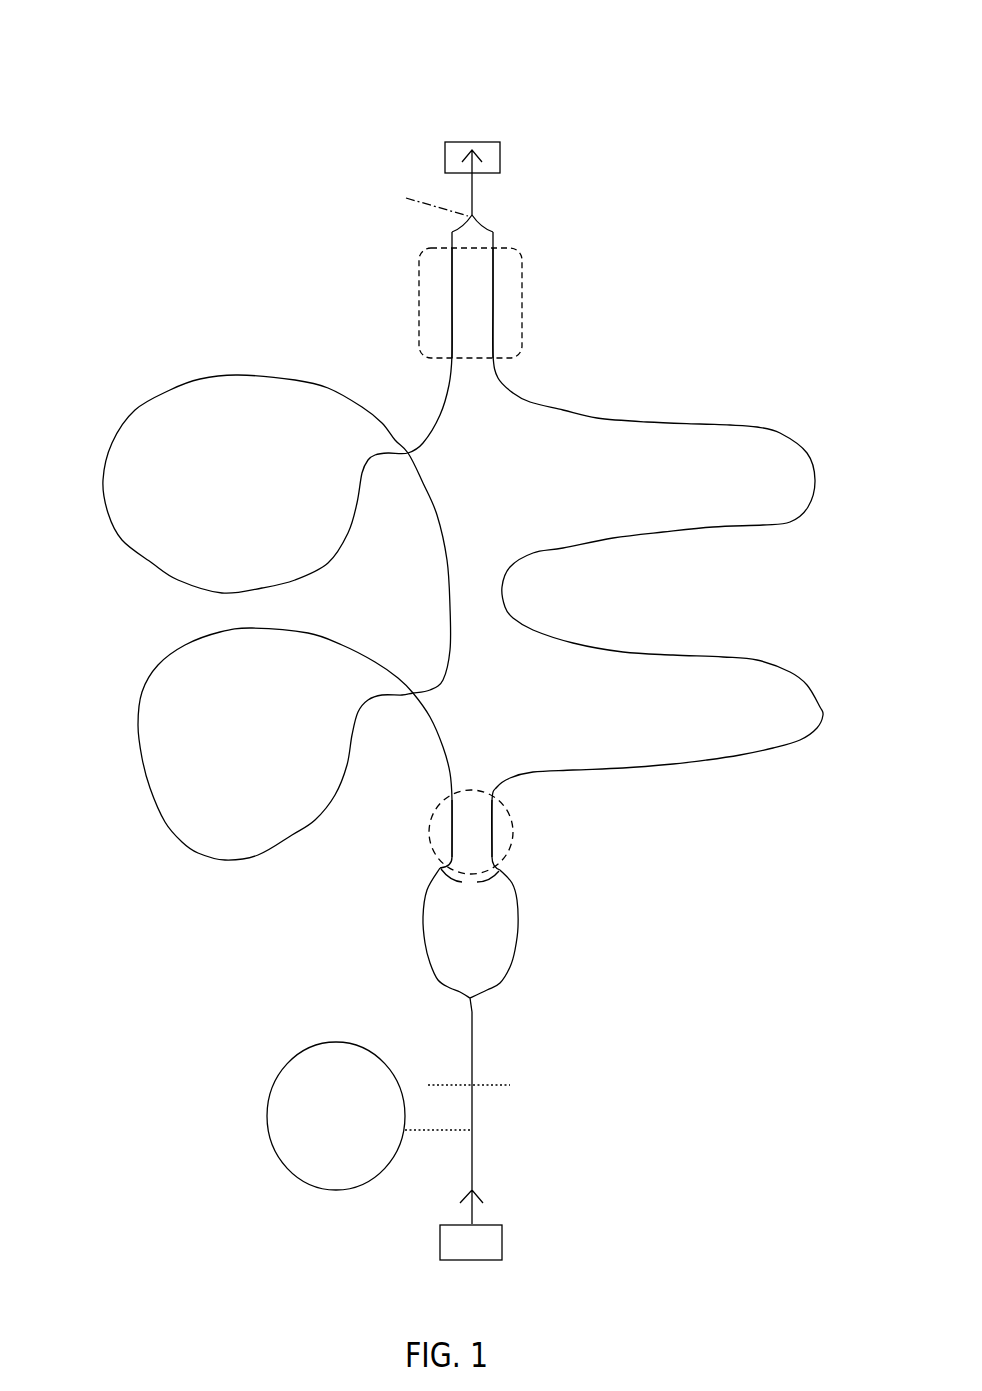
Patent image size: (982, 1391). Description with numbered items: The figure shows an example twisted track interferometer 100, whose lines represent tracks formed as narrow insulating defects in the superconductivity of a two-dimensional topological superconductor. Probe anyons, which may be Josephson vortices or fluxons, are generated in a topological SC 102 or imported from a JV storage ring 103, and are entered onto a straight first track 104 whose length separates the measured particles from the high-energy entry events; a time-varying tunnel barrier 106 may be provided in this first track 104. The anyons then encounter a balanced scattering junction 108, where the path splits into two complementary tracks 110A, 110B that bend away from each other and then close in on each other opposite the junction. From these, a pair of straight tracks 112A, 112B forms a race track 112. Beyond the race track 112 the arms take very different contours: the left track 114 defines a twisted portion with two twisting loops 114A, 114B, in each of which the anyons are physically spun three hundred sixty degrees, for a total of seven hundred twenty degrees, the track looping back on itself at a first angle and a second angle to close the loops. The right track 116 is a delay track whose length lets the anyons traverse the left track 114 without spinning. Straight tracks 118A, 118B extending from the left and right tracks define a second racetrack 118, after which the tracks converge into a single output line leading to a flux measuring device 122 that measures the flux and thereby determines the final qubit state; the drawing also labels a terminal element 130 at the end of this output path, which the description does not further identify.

The twisted track interferometer 100 is at (431, 660).
The topological SC 102 is at (502, 1243).
The JV storage ring 103 is at (268, 1103).
The first track 104 is at (475, 1175).
The time-varying tunnel barrier 106 is at (500, 1085).
The scattering junction 108 is at (472, 1001).
The complementary track 110A is at (423, 923).
The complementary track 110B is at (518, 927).
The race track 112 is at (466, 827).
The straight track 112A is at (450, 842).
The straight track 112B is at (492, 842).
The left track 114 is at (251, 557).
The first twisting loop 114A is at (150, 675).
The second twisting loop 114B is at (198, 378).
The right track 116 is at (622, 770).
The racetrack 118 is at (489, 299).
The straight track 118A is at (452, 300).
The straight track 118B is at (493, 302).
The flux measuring device 122 is at (474, 193).
The collection device 130 is at (500, 158).